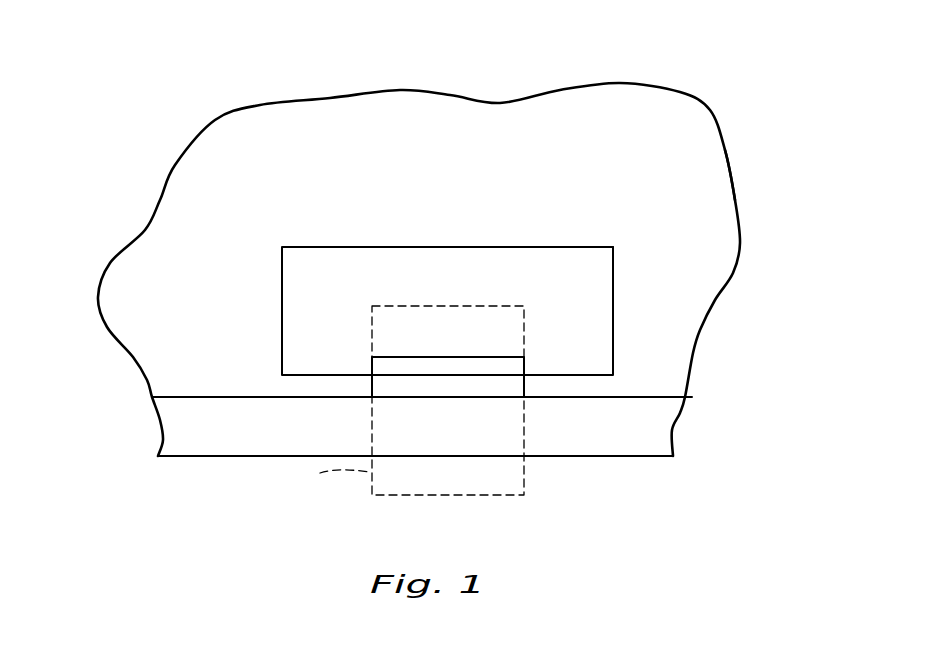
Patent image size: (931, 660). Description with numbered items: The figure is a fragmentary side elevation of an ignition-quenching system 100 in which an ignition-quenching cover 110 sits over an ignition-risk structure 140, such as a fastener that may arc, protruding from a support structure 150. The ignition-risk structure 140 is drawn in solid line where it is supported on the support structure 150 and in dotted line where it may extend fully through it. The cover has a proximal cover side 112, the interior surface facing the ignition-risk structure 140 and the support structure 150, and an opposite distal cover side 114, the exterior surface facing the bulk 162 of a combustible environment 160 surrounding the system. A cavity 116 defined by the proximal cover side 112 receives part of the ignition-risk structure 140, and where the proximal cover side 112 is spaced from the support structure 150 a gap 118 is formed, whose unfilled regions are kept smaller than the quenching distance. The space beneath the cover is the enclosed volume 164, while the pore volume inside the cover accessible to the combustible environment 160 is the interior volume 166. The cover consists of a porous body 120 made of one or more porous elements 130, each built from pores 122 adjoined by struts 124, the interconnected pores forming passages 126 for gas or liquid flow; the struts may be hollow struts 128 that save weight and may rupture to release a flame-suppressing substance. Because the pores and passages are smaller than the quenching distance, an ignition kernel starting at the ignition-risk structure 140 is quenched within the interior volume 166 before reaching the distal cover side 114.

The ignition-quenching system 100 is at (212, 103).
The ignition-quenching cover 110 is at (306, 232).
The proximal cover side 112 is at (557, 377).
The distal cover side 114 is at (552, 247).
The cavity 116 is at (400, 318).
The gap 118 is at (592, 375).
The porous body 120 is at (282, 280).
The pores 122 is at (355, 267).
The struts 124 is at (390, 262).
The passages 126 is at (428, 265).
The hollow struts 128 is at (470, 262).
The porous elements 130 is at (282, 305).
The ignition-risk structure 140 is at (372, 383).
The support structure 150 is at (203, 397).
The combustible environment 160 is at (643, 116).
The bulk 162 is at (707, 172).
The enclosed volume 164 is at (500, 330).
The interior volume 166 is at (600, 282).